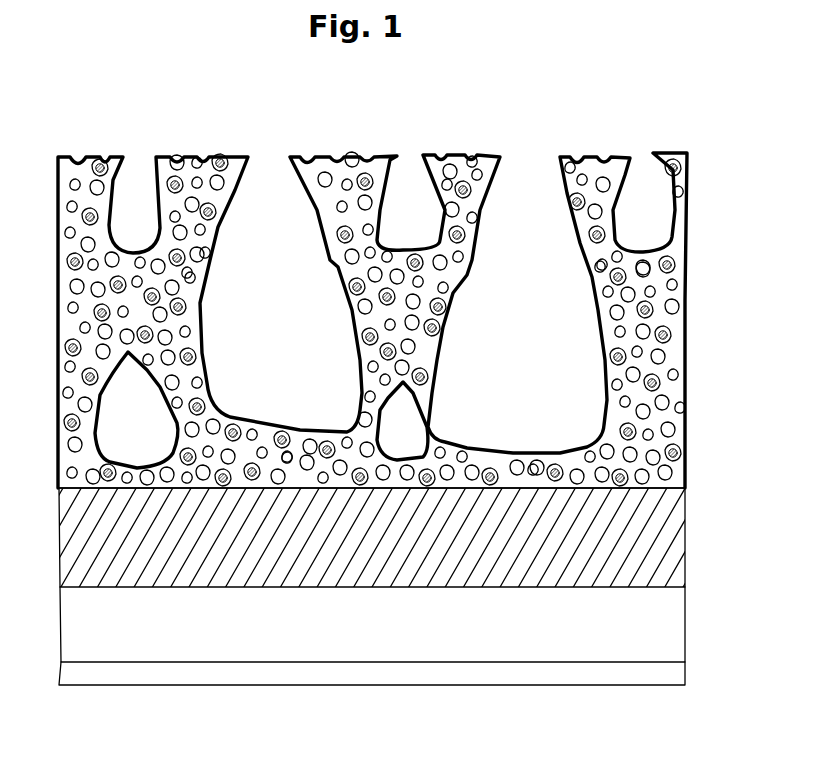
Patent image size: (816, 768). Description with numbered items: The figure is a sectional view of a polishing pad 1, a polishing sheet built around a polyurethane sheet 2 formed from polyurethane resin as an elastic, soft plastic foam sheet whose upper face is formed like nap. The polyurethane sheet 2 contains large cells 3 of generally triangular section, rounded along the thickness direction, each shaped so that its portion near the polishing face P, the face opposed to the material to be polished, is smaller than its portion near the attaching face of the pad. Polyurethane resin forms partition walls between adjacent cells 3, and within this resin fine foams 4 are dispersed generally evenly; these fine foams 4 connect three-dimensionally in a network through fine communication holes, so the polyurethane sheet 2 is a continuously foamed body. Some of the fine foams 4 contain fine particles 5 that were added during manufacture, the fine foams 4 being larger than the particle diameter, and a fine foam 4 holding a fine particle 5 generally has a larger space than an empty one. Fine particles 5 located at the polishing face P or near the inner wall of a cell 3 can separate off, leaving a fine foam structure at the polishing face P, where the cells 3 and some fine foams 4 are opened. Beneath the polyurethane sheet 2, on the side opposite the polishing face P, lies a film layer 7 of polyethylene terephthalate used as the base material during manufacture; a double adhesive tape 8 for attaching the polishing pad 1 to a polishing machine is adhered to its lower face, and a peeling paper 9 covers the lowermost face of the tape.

The polishing pad 1 is at (395, 133).
The polyurethane sheet 2 is at (678, 318).
The cell 3 is at (562, 166).
The fine foam 4 is at (480, 160).
The fine particle 5 is at (227, 158).
The polishing face P is at (350, 150).
The film layer 7 is at (668, 527).
The double adhesive tape 8 is at (657, 630).
The peeling paper 9 is at (662, 673).